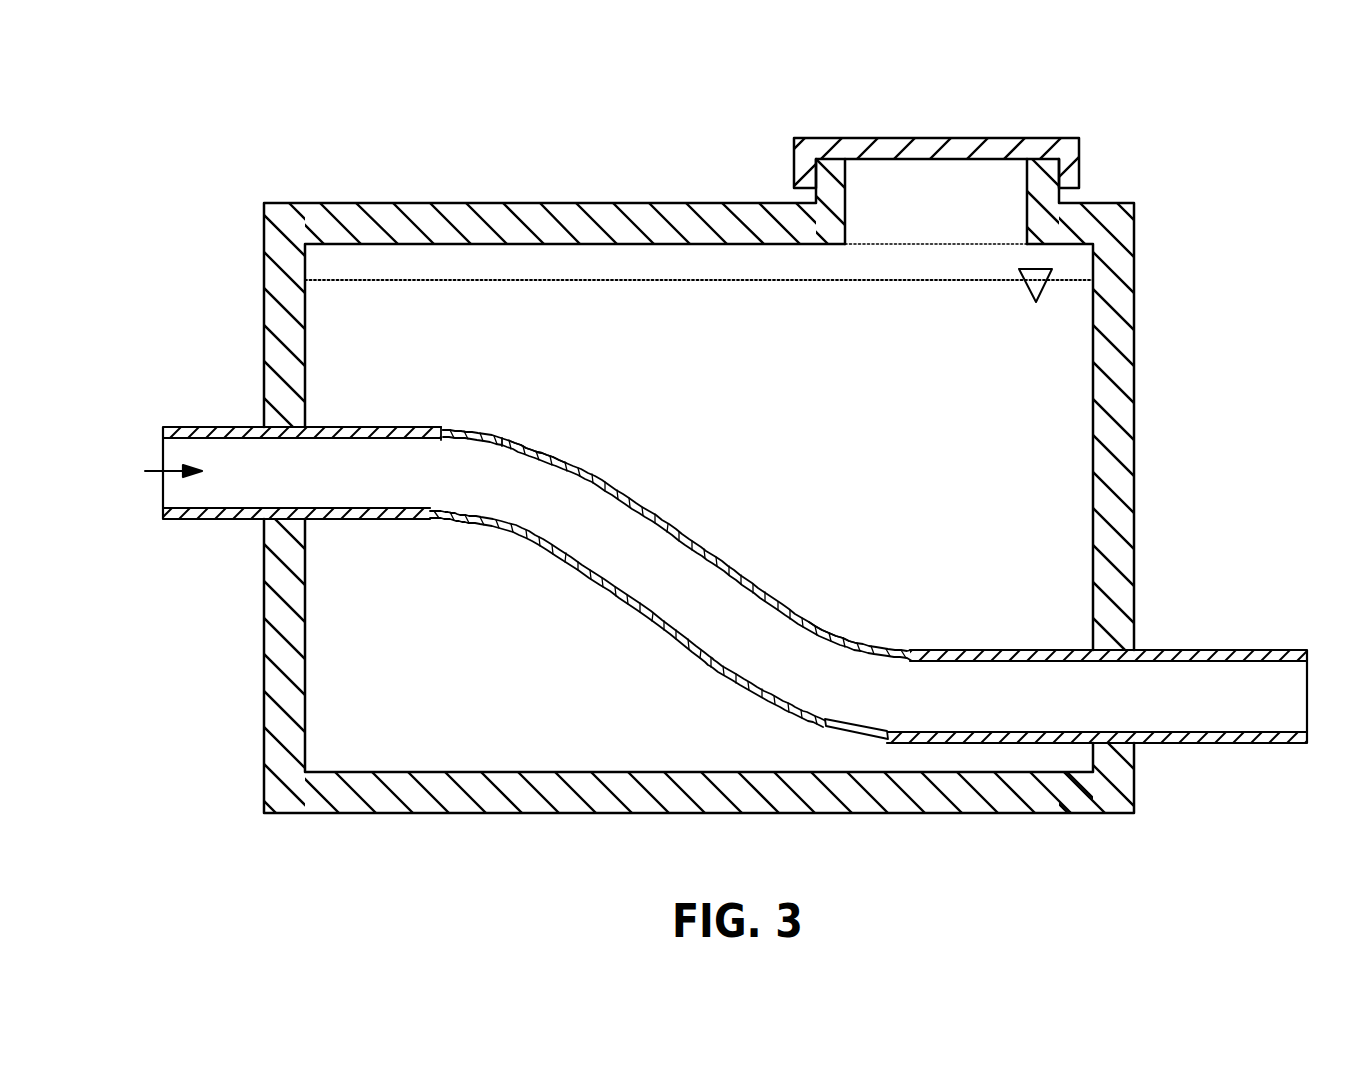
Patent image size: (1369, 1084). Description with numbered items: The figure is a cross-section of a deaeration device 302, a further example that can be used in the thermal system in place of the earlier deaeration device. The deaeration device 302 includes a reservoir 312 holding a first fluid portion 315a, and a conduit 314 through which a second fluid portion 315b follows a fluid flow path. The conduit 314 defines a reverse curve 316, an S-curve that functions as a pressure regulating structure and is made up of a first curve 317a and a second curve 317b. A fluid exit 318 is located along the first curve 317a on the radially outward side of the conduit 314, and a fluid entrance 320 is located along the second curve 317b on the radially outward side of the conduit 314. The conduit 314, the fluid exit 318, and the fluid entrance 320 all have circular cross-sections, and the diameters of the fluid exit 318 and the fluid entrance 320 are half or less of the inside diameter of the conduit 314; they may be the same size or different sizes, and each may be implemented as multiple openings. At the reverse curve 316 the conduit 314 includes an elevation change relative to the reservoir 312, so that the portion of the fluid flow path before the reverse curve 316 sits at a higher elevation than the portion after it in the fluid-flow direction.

The deaeration device 302 is at (684, 436).
The reservoir 312 is at (568, 203).
The conduit 314 is at (1252, 650).
The first fluid portion 315a is at (1025, 360).
The second fluid portion 315b is at (382, 585).
The reverse curve 316 is at (720, 535).
The first curve 317a is at (542, 452).
The second curve 317b is at (848, 632).
The fluid exit 318 is at (467, 443).
The fluid entrance 320 is at (857, 727).